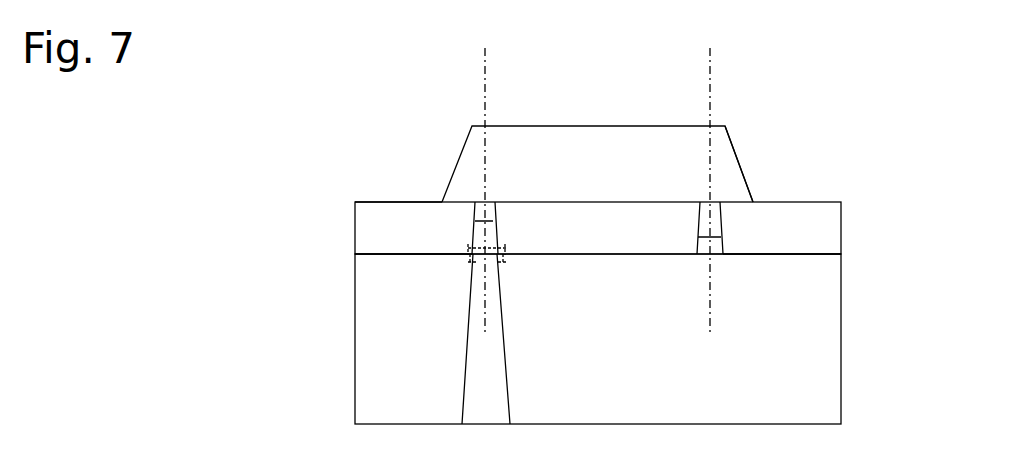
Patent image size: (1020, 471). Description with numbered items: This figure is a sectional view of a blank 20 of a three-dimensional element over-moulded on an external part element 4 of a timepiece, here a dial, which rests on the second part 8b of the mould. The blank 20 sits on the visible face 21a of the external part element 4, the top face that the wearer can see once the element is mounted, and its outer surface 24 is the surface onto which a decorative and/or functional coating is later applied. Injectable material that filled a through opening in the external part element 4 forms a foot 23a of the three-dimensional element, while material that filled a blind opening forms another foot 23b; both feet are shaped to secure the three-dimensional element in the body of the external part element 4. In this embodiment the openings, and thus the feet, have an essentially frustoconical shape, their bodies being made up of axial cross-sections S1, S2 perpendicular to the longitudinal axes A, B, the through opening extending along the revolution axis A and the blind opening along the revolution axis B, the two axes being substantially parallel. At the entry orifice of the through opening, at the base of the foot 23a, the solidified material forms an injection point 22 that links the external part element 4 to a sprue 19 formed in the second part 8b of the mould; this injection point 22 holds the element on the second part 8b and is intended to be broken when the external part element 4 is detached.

The external part element 4 is at (802, 205).
The second part 8b is at (788, 354).
The sprue 19 is at (482, 390).
The blank 20 is at (587, 140).
The visible face 21a is at (367, 201).
The injection point 22 is at (482, 262).
The foot 23a is at (473, 237).
The another foot 23b is at (722, 221).
The outer surface 24 is at (733, 133).
The axial cross-section S1 is at (495, 218).
The axial cross-section S2 is at (707, 237).
The longitudinal axis A is at (709, 177).
The longitudinal axis B is at (484, 177).